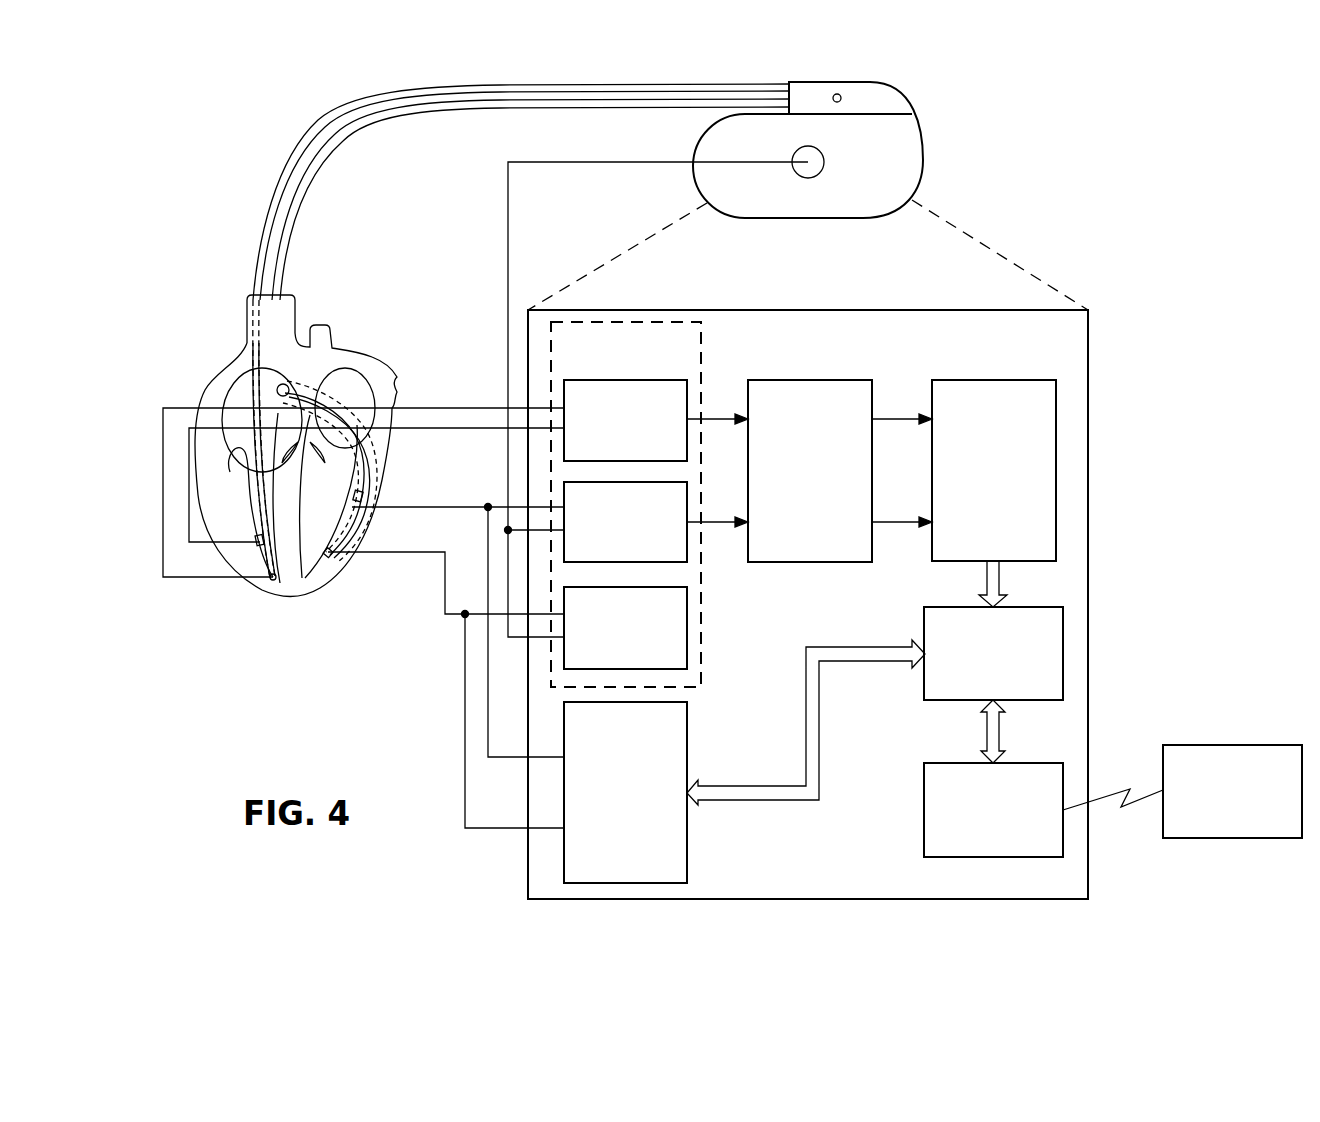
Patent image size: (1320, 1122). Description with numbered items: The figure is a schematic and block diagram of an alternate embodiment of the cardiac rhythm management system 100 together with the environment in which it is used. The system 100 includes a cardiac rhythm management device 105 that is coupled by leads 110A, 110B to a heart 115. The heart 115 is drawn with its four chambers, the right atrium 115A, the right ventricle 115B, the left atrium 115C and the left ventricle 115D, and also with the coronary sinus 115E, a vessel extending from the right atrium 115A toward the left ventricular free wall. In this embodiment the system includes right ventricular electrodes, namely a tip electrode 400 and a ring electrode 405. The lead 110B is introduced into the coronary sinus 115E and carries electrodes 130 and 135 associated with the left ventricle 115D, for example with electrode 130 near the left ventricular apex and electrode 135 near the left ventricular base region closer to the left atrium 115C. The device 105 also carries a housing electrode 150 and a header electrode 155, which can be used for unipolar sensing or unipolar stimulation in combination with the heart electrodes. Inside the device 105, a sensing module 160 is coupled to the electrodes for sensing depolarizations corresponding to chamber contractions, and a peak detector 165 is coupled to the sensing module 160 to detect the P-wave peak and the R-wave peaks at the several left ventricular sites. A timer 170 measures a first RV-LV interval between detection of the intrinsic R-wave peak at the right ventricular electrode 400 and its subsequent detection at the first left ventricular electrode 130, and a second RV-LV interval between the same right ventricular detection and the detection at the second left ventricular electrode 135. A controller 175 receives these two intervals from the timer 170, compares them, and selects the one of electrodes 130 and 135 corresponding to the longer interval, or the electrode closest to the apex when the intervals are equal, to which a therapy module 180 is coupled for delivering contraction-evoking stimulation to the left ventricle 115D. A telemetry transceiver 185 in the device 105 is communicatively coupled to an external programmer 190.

The cardiac rhythm management system 100 is at (363, 680).
The cardiac rhythm management device 105 is at (923, 162).
The lead 110A is at (315, 132).
The lead 110B is at (413, 122).
The heart 115 is at (277, 597).
The right atrium 115A is at (238, 395).
The right ventricle 115B is at (235, 497).
The left atrium 115C is at (345, 387).
The left ventricle 115D is at (330, 518).
The coronary sinus 115E is at (294, 335).
The electrode 130 is at (333, 555).
The electrode 135 is at (360, 503).
The housing electrode 150 is at (822, 172).
The header electrode 155 is at (840, 102).
The sensing module 160 is at (703, 342).
The peak detector 165 is at (808, 380).
The timer 170 is at (993, 380).
The controller 175 is at (1018, 607).
The therapy module 180 is at (687, 737).
The telemetry transceiver 185 is at (1018, 763).
The external programmer 190 is at (1258, 745).
The tip electrode 400 is at (304, 590).
The ring electrode 405 is at (262, 545).